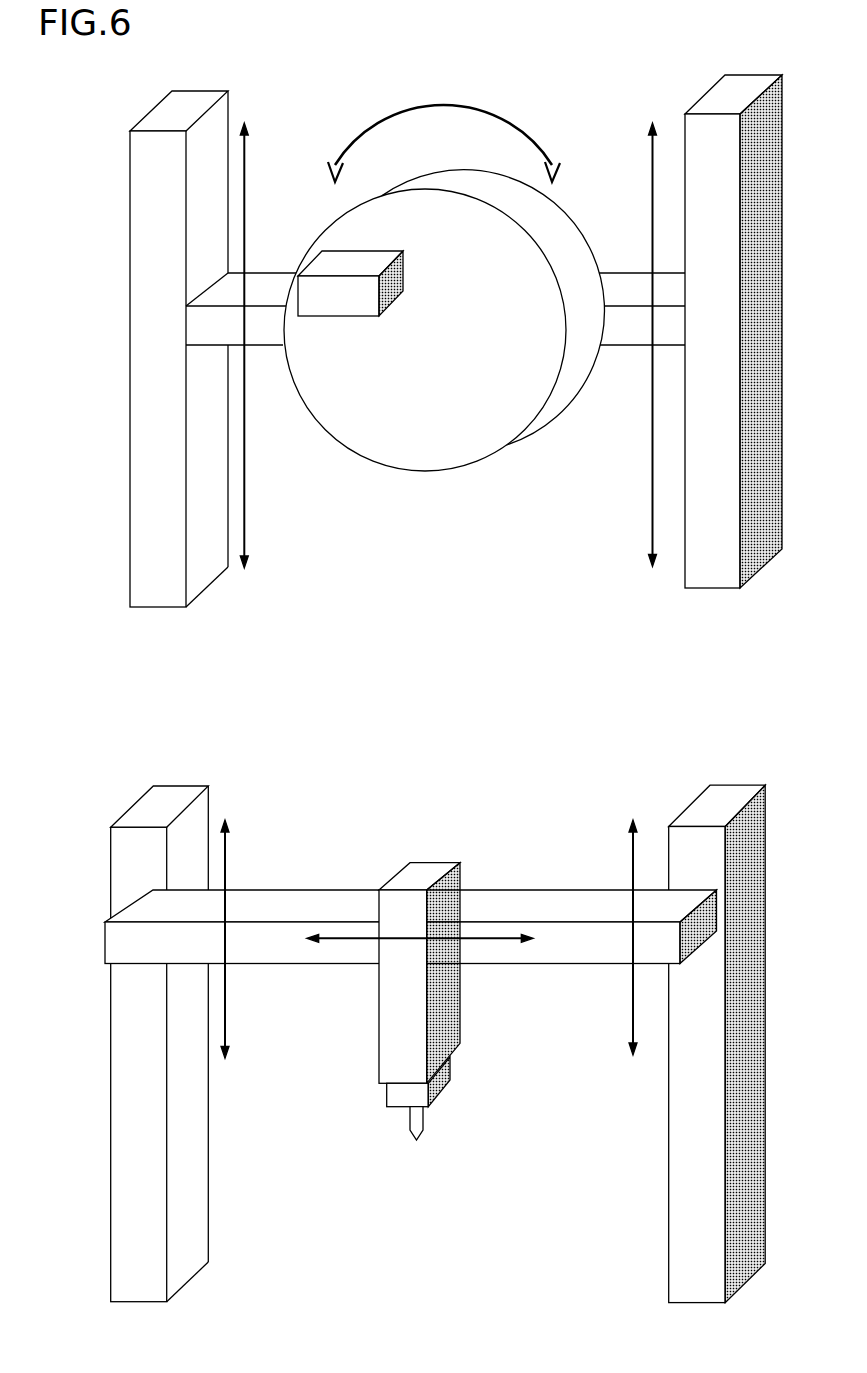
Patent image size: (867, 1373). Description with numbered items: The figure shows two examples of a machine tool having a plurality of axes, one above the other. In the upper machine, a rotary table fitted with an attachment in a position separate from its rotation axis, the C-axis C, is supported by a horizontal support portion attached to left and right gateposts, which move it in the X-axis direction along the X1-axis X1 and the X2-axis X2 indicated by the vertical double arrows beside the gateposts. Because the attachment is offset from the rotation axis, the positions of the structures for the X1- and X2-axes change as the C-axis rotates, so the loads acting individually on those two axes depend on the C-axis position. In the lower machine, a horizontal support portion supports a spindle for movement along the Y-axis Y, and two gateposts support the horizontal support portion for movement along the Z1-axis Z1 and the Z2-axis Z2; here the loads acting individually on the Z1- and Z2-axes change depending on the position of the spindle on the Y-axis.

The C-axis C is at (444, 122).
The X1-axis X1 is at (635, 345).
The X2-axis X2 is at (264, 345).
The Y-axis Y is at (420, 969).
The Z1-axis Z1 is at (615, 937).
The Z2-axis Z2 is at (243, 939).